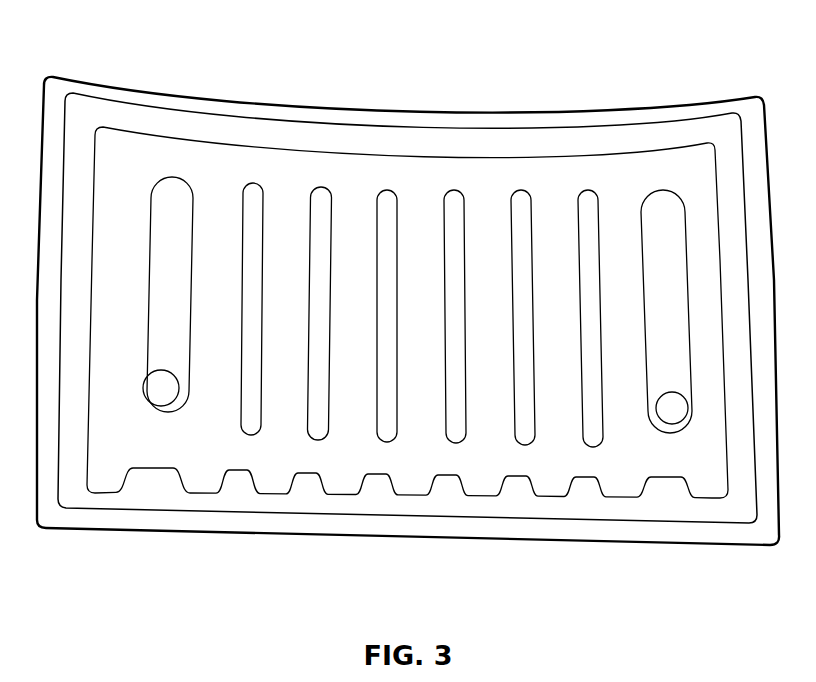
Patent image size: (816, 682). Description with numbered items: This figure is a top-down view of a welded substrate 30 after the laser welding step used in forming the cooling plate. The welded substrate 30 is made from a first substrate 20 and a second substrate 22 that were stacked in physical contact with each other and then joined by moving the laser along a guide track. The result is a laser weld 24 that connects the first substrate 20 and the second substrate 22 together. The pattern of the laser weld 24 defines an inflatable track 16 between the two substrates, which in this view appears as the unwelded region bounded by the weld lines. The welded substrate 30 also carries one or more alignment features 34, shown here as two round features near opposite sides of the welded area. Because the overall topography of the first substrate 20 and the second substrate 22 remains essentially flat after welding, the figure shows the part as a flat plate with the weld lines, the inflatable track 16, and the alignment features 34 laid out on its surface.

The welded substrate 30 is at (147, 44).
The first substrate 20 is at (117, 517).
The second substrate 22 is at (372, 495).
The laser weld 24 is at (612, 497).
The inflatable track 16 is at (492, 457).
The alignment features 34 is at (158, 388).